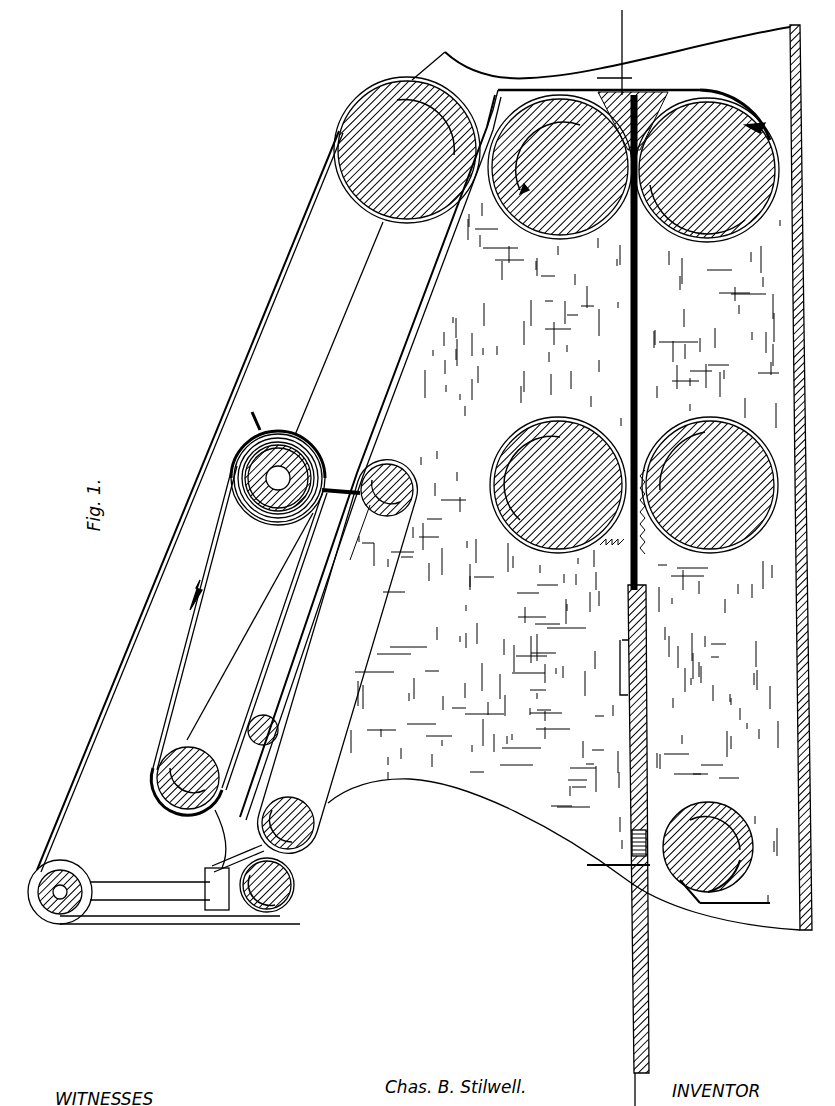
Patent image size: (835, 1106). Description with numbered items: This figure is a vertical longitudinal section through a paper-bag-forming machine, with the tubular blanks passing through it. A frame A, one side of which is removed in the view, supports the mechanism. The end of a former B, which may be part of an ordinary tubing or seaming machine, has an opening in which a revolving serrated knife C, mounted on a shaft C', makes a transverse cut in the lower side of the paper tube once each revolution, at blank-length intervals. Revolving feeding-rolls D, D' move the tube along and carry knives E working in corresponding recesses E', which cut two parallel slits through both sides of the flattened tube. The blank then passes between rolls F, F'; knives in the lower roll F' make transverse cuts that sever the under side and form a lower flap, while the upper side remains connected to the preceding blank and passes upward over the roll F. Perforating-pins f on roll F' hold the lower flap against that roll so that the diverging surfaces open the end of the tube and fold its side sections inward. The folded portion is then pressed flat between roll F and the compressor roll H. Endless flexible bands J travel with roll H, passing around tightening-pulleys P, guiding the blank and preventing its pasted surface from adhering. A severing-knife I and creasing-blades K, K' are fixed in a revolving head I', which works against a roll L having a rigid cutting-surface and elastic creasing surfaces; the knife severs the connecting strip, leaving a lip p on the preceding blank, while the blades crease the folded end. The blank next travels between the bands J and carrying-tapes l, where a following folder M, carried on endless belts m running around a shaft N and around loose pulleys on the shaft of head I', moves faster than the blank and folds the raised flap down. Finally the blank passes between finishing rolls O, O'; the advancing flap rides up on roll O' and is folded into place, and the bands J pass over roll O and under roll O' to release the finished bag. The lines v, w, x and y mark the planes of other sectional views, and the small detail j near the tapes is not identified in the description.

The frame A is at (417, 553).
The former B is at (417, 553).
The revolving serrated knife C is at (417, 553).
The knife-shaft C' is at (738, 869).
The feeding-roll D is at (417, 553).
The feeding-roll D' is at (417, 553).
The knives E is at (597, 557).
The recesses E' is at (662, 528).
The roll F is at (417, 553).
The roll F' is at (417, 553).
The perforating-pins f is at (743, 106).
The compressor roll H is at (392, 88).
The severing-knife I is at (417, 553).
The revolving head I' is at (278, 454).
The bands J is at (370, 457).
The guide j is at (333, 546).
The creasing-blade K is at (338, 477).
The creasing-blade K' is at (247, 405).
The roll L is at (413, 488).
The bands or tapes l is at (338, 657).
The following folder M is at (265, 715).
The endless carrying-belts m is at (236, 611).
The shaft N is at (200, 750).
The finishing roll O is at (417, 553).
The finishing roll O' is at (417, 553).
The tightening-pulleys P is at (50, 905).
The lip p is at (640, 848).
The section line v is at (612, 47).
The section line w is at (498, 88).
The section line x is at (670, 881).
The section line y is at (270, 862).